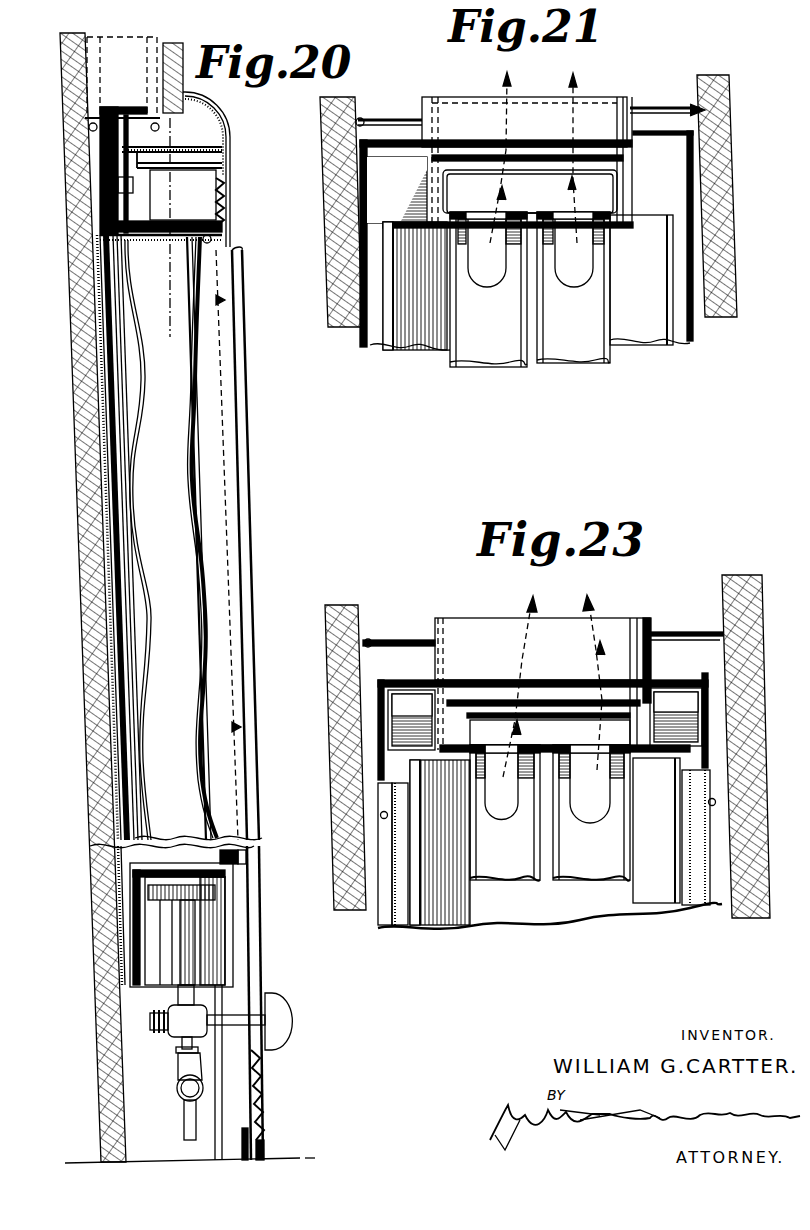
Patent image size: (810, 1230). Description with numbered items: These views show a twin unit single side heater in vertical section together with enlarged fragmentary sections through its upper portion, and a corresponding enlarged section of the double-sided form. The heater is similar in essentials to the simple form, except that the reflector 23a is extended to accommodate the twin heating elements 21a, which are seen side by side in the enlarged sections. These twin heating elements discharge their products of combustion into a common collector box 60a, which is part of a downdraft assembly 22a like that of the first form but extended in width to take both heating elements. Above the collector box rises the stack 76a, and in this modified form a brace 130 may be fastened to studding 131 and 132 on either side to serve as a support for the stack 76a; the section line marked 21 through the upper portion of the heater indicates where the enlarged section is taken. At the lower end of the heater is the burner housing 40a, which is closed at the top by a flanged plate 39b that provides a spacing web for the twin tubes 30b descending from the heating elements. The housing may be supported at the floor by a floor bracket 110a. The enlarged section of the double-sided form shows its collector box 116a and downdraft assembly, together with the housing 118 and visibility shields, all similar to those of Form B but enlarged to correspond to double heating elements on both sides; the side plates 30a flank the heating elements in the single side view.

In FIG. 20, the tube / container 21 is at (166, 43).
In FIG. 20, the twin heating elements 21a is at (205, 443).
In FIG. 21, the twin heating elements 21a is at (548, 358).
In FIG. 20, the downdraft assembly 22a is at (200, 204).
In FIG. 21, the downdraft assembly 22a is at (603, 193).
In FIG. 21, the reflector 23a is at (645, 340).
In FIG. 21, the side plate 30a is at (455, 358).
In FIG. 20, the twin tubes 30b is at (205, 540).
In FIG. 20, the flanged plate 39b is at (240, 862).
In FIG. 20, the burner housing 40a is at (233, 969).
In FIG. 20, the common collector box 60a is at (216, 171).
In FIG. 21, the common collector box 60a is at (532, 152).
In FIG. 20, the stack 76a is at (108, 107).
In FIG. 21, the stack 76a is at (484, 86).
In FIG. 20, the floor bracket 110a is at (220, 1150).
In FIG. 23, the collector box 116a is at (575, 700).
In FIG. 23, the side box 118 is at (412, 673).
In FIG. 20, the brace 130 is at (90, 111).
In FIG. 21, the brace 130 is at (662, 102).
In FIG. 21, the studding 131 is at (334, 252).
In FIG. 21, the studding 132 is at (730, 207).